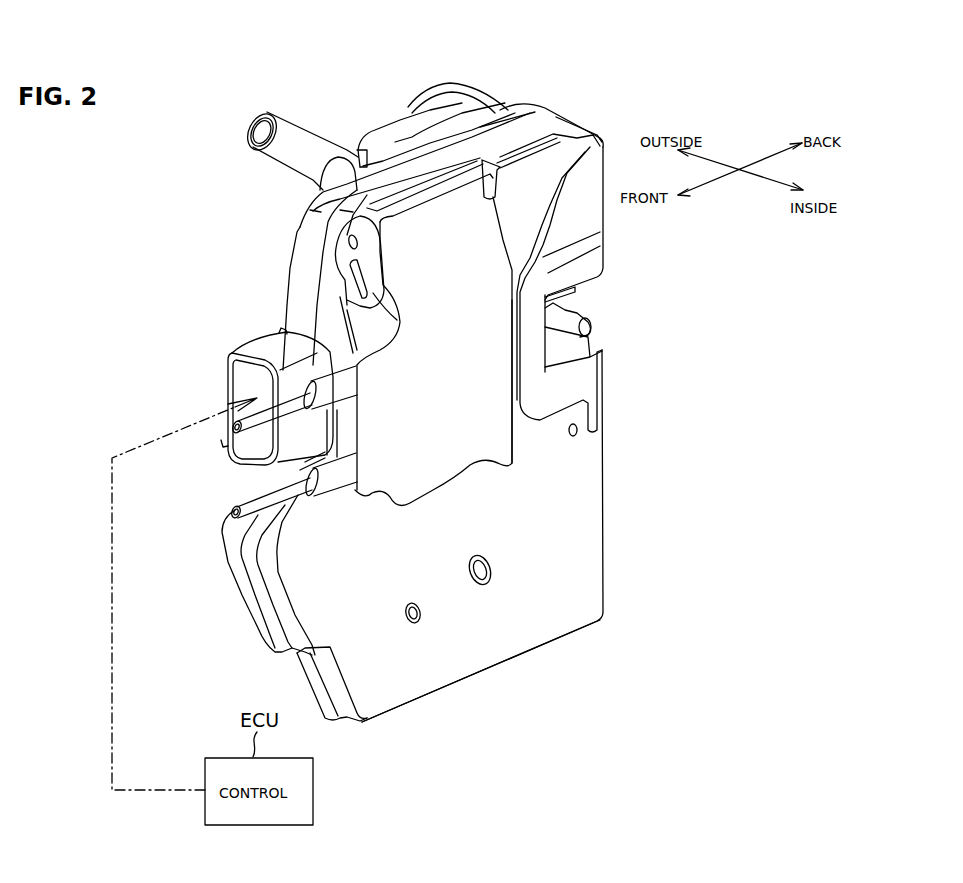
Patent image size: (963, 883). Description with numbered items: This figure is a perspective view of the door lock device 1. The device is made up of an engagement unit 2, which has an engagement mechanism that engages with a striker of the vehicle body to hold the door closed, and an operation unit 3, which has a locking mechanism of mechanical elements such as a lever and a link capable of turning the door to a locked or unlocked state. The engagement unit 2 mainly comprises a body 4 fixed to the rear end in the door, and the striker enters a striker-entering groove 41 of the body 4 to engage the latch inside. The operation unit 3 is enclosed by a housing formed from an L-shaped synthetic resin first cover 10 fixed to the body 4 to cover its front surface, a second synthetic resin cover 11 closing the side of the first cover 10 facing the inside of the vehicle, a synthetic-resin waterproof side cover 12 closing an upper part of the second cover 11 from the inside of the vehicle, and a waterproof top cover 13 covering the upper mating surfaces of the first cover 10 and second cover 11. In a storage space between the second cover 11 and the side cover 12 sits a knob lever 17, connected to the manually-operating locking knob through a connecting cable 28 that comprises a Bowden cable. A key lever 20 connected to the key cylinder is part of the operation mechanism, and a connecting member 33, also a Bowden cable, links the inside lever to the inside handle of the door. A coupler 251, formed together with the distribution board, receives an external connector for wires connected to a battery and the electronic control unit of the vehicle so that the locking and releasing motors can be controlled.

The door lock device 1 is at (605, 132).
The engagement unit 2 is at (607, 253).
The operation unit 3 is at (297, 242).
The body 4 is at (607, 397).
The first cover 10 is at (255, 620).
The second cover 11 is at (556, 644).
The waterproof side cover 12 is at (514, 444).
The waterproof top cover 13 is at (541, 107).
The knob lever 17 is at (338, 274).
The key lever 20 is at (297, 135).
The connecting cable 28 is at (233, 452).
The connecting member 33 is at (240, 503).
The striker-entering groove 41 is at (582, 310).
The coupler 251 is at (271, 360).